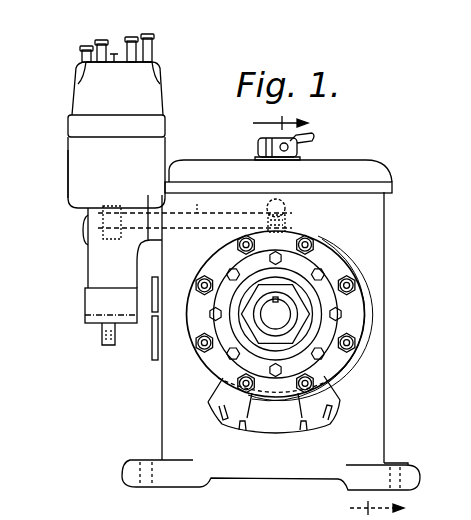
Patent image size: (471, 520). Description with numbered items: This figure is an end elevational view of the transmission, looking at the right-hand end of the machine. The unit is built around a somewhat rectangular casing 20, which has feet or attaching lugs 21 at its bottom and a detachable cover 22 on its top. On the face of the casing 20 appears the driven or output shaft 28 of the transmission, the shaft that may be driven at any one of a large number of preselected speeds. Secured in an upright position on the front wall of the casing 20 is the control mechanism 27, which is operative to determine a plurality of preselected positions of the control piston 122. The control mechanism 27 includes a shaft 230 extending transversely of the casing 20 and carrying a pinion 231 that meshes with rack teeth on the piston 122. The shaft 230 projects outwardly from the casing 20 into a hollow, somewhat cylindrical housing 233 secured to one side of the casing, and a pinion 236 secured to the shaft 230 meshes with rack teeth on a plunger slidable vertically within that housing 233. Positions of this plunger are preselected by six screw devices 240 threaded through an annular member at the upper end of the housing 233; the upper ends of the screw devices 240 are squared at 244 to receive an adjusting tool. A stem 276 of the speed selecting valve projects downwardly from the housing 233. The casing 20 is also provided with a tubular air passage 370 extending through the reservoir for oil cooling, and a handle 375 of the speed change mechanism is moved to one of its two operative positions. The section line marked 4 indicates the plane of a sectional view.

The casing 20 is at (385, 297).
The feet or attaching lugs 21 is at (165, 478).
The detachable cover 22 is at (372, 165).
The control mechanism 27 is at (66, 179).
The driven or output shaft 28 is at (276, 314).
The control piston 122 is at (286, 204).
The shaft 230 is at (214, 206).
The pinion 231 is at (286, 222).
The cylindrical housing 233 is at (136, 170).
The pinion 236 is at (106, 238).
The screw devices 240 is at (150, 62).
The squared upper ends 244 is at (154, 40).
The stem 276 is at (109, 345).
The tubular air passage 370 is at (236, 430).
The handle 375 is at (314, 136).
The section line 4 is at (319, 316).